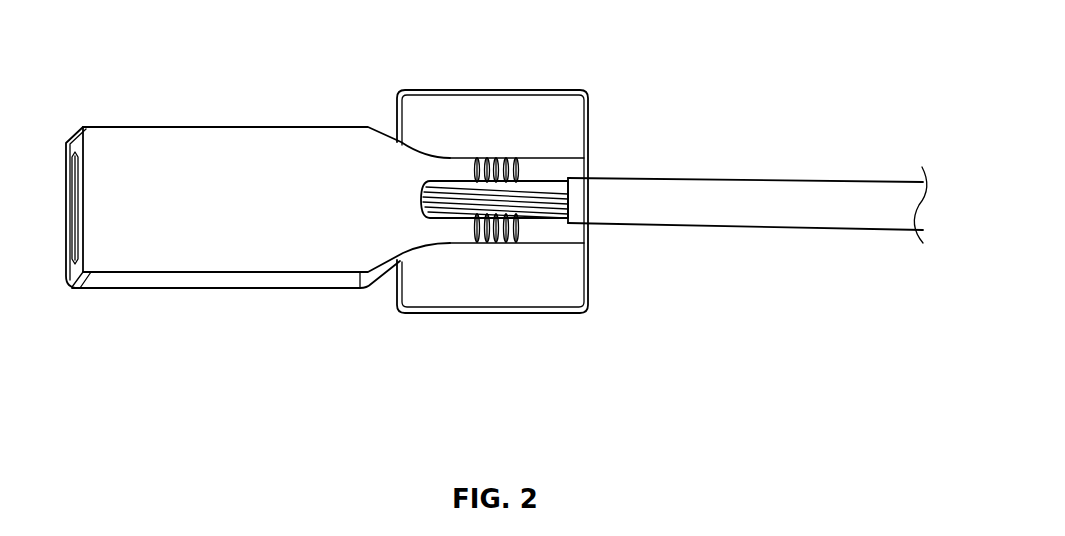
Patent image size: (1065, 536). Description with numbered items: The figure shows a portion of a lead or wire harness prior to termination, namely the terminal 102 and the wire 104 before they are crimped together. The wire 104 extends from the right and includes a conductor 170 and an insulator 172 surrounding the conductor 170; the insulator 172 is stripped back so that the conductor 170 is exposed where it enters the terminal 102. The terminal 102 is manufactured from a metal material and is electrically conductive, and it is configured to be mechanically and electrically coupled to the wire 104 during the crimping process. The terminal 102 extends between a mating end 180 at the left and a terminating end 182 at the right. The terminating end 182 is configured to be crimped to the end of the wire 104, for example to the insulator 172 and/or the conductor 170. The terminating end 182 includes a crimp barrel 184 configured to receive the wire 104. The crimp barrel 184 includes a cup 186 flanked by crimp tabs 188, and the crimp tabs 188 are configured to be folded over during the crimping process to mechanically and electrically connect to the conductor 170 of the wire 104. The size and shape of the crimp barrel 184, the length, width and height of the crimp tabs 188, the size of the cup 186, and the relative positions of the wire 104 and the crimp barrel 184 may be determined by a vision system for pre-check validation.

The terminal 102 is at (234, 122).
The wire 104 is at (747, 208).
The conductor 170 is at (502, 204).
The insulator 172 is at (689, 205).
The mating end 180 is at (71, 271).
The terminating end 182 is at (595, 126).
The crimp barrel 184 is at (474, 121).
The cup 186 is at (550, 232).
The crimp tabs 188 is at (522, 115).